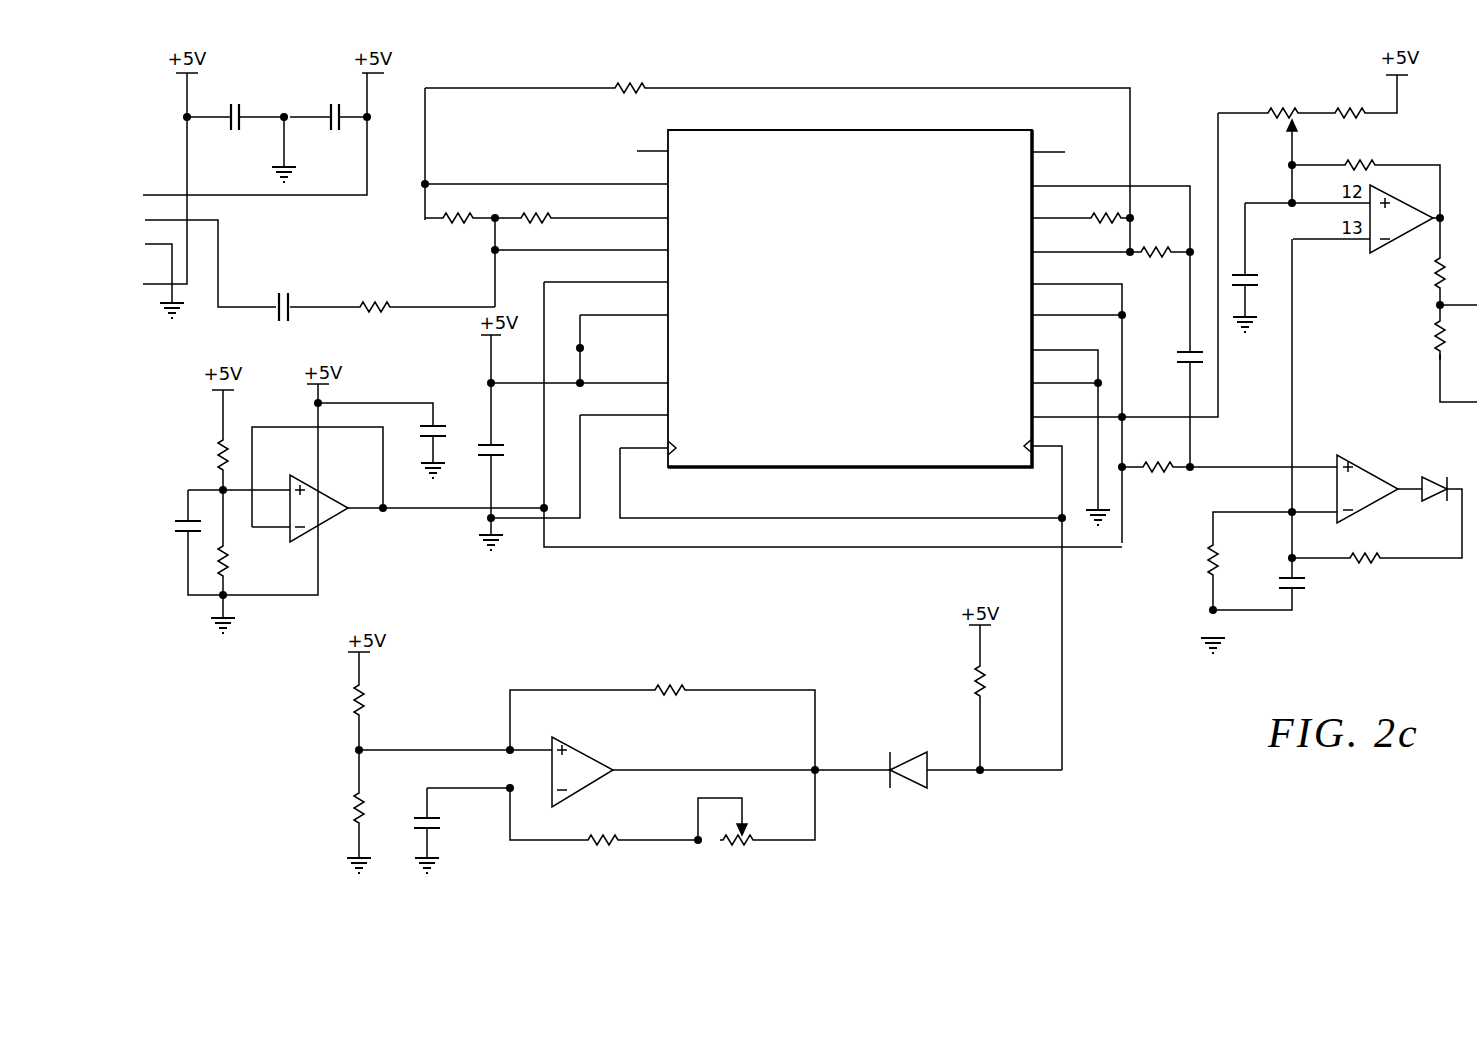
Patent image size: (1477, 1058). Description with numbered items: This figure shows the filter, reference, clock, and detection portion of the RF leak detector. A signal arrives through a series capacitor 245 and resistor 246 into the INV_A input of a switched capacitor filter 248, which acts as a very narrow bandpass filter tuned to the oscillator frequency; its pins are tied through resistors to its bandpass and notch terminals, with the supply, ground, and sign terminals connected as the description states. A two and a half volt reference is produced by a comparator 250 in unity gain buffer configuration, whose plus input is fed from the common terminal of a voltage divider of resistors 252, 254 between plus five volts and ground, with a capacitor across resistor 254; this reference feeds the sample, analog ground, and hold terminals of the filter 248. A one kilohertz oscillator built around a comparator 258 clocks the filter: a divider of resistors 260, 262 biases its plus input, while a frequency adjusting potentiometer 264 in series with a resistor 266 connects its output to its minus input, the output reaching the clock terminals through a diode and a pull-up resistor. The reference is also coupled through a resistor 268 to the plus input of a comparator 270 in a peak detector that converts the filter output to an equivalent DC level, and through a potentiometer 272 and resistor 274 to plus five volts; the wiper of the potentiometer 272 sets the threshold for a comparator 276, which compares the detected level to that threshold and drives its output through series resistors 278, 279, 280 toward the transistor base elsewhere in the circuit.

The capacitor 245 is at (287, 303).
The resistor 246 is at (370, 303).
The switched capacitor filter 248 is at (953, 130).
The comparator 250 is at (330, 520).
The resistor 252 is at (218, 448).
The resistor 254 is at (230, 558).
The comparator 258 is at (587, 758).
The resistor 260 is at (368, 698).
The resistor 262 is at (355, 810).
The frequency adjusting potentiometer 264 is at (738, 848).
The resistor 266 is at (608, 850).
The resistor 268 is at (1157, 474).
The comparator 270 is at (1367, 465).
The potentiometer 272 is at (1278, 108).
The resistor 274 is at (1353, 112).
The comparator 276 is at (1397, 245).
The resistor 278 is at (1437, 285).
The resistor 279 is at (1437, 308).
The resistor 280 is at (1425, 343).